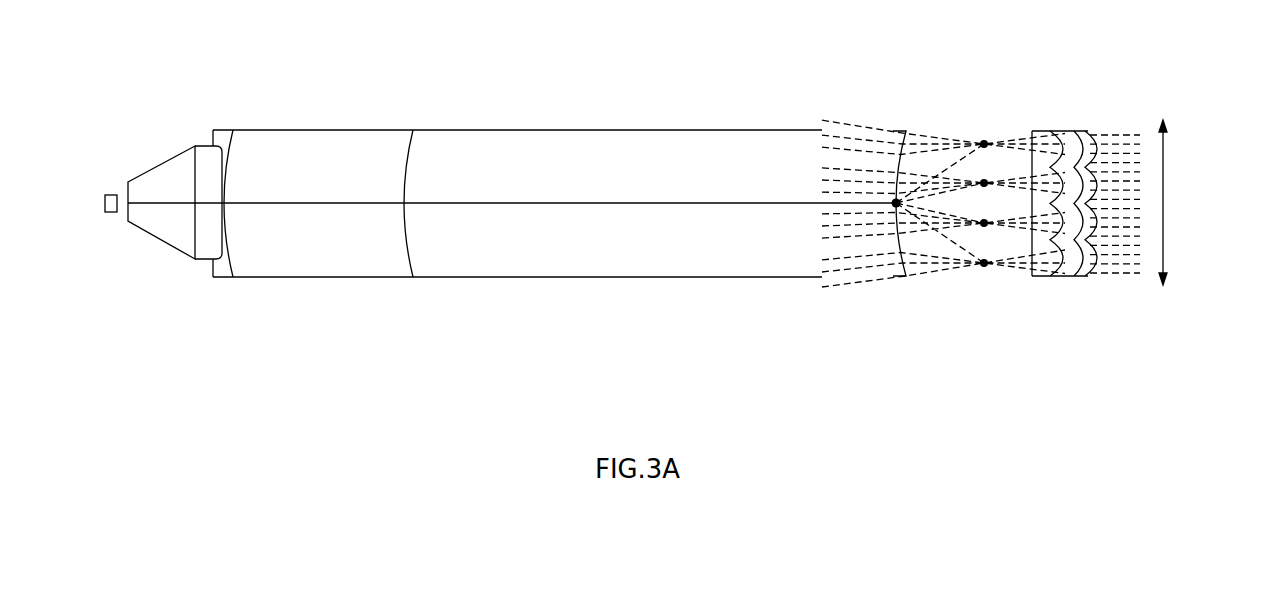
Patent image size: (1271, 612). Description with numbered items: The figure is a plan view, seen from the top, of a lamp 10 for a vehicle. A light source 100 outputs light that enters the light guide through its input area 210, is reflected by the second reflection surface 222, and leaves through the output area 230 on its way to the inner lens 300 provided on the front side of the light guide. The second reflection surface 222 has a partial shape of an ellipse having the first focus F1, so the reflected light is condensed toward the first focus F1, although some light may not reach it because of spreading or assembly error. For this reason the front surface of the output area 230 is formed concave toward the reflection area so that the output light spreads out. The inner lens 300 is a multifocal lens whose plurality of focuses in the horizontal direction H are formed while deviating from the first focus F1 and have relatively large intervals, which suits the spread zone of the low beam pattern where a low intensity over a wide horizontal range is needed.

The lamp for a vehicle 10 is at (1068, 32).
The light source 100 is at (110, 212).
The input area 210 is at (166, 230).
The second reflection surface 222 is at (322, 253).
The output area 230 is at (617, 253).
The inner lens 300 is at (1070, 227).
The first focus F1 is at (896, 203).
The horizontal direction H is at (1163, 205).